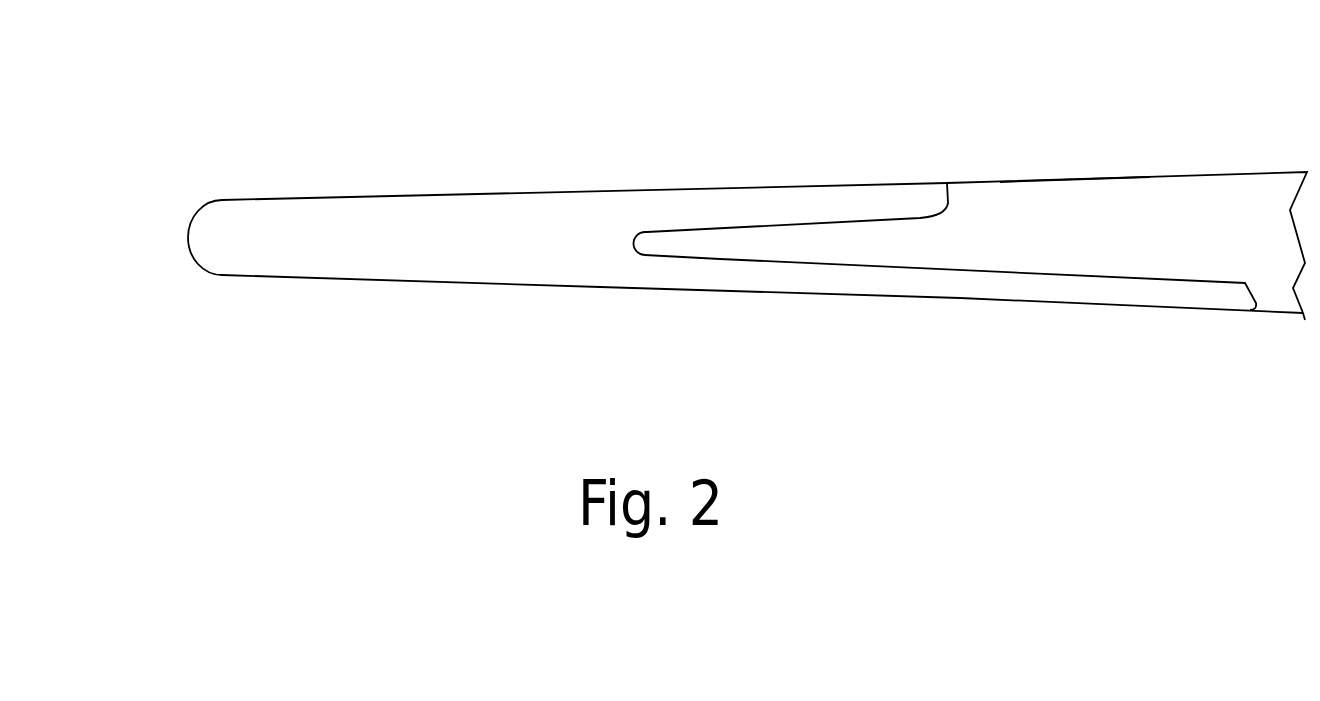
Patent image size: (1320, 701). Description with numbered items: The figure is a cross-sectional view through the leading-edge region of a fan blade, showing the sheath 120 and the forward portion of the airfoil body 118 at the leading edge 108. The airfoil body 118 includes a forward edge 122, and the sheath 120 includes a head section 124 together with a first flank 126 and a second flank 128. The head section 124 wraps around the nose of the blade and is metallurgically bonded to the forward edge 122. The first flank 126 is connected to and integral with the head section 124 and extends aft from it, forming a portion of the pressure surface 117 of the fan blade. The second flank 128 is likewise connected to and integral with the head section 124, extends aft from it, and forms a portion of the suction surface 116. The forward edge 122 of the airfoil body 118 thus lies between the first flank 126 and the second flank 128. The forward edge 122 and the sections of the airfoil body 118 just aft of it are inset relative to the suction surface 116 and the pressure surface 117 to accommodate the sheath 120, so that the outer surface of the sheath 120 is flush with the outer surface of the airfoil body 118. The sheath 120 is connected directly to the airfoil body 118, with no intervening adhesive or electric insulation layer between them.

The leading edge 108 is at (188, 232).
The suction surface 116 is at (1213, 318).
The pressure surface 117 is at (1075, 168).
The airfoil body 118 is at (1115, 218).
The sheath 120 is at (338, 232).
The forward edge 122 is at (655, 243).
The head section 124 is at (517, 252).
The first flank 126 is at (802, 203).
The second flank 128 is at (957, 287).